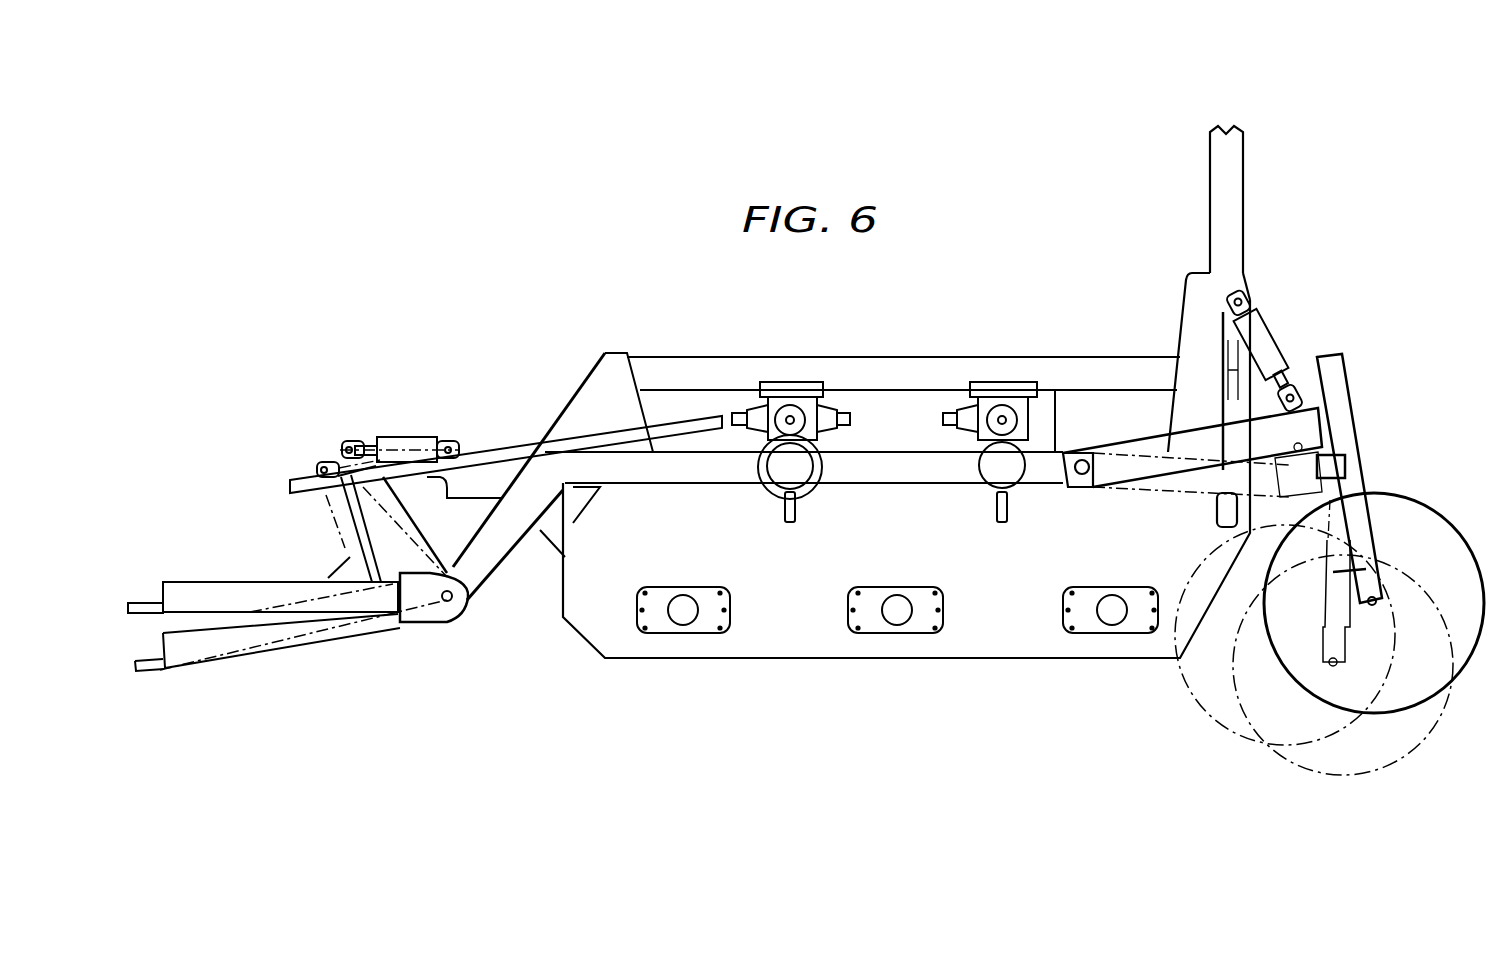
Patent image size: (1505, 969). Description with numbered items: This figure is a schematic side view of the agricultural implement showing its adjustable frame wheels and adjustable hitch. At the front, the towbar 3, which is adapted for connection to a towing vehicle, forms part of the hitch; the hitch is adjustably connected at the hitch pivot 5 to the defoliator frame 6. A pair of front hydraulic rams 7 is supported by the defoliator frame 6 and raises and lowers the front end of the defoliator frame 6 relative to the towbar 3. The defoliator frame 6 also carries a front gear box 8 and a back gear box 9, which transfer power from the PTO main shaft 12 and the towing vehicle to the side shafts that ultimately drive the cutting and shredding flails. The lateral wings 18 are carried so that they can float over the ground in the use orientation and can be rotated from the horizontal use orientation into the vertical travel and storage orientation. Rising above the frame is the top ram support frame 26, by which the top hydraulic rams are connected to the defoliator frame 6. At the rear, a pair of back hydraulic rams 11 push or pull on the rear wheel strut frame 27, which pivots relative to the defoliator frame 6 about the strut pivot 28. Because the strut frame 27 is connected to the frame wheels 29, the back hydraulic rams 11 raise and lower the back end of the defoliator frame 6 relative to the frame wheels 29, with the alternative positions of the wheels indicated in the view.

The towbar 3 is at (205, 581).
The hitch pivot 5 is at (452, 620).
The defoliator frame 6 is at (504, 562).
The front hydraulic rams 7 is at (405, 435).
The front gear box 8 is at (793, 380).
The back gear box 9 is at (1003, 381).
The back hydraulic rams 11 is at (1262, 330).
The PTO main shaft 12 is at (517, 445).
The lateral wings 18 is at (892, 559).
The top ram support frame 26 is at (1243, 177).
The rear wheel strut frame 27 is at (1342, 360).
The strut pivot 28 is at (1083, 475).
The frame wheels 29 is at (1404, 500).